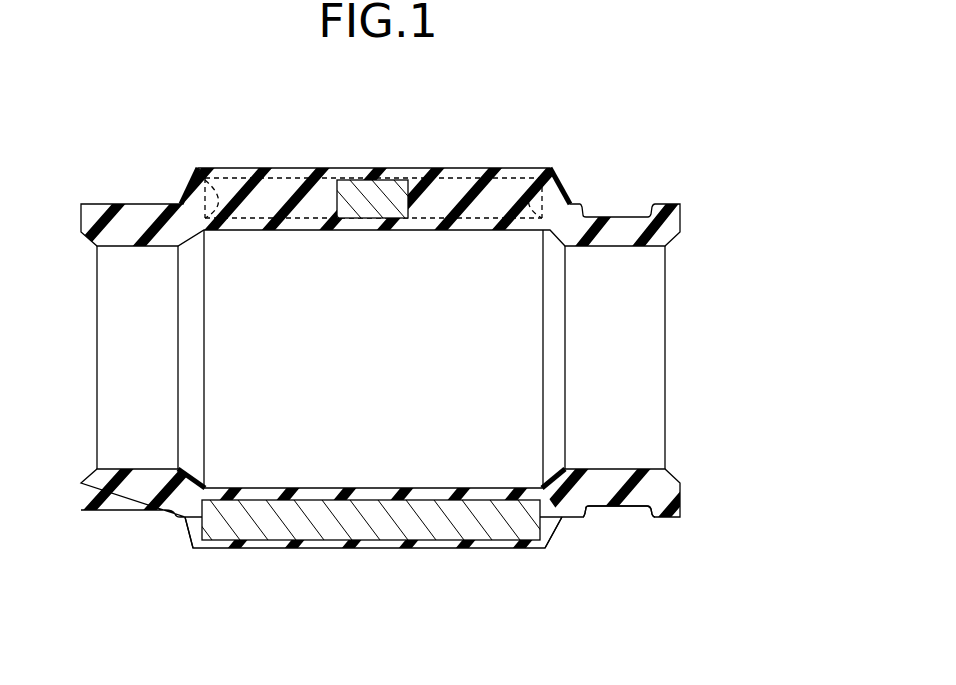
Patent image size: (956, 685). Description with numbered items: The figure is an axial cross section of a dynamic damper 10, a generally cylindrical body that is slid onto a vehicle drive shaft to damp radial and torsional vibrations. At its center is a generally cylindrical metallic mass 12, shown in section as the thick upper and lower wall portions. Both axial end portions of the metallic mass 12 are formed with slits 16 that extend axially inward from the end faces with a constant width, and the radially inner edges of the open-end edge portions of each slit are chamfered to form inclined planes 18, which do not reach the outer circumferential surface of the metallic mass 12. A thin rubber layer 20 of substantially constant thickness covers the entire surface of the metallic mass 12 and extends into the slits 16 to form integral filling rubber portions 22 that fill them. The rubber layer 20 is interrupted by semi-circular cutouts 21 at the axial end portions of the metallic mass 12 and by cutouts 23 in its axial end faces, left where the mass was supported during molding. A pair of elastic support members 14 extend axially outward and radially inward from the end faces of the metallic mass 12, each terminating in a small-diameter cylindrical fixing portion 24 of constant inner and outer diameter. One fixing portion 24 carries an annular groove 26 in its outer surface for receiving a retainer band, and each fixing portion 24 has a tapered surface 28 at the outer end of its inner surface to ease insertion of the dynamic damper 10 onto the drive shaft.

The dynamic damper 10 is at (654, 126).
The metallic mass 12 is at (438, 528).
The elastic support members 14 is at (188, 218).
The slits 16 is at (290, 190).
The inclined planes 18 is at (186, 196).
The rubber layer 20 is at (360, 176).
The cutouts 21 is at (218, 544).
The filling rubber portions 22 is at (263, 203).
The cutouts 23 is at (194, 530).
The cylindrical fixing portion 24 is at (128, 218).
The annular groove 26 is at (587, 508).
The tapered surface 28 is at (91, 476).